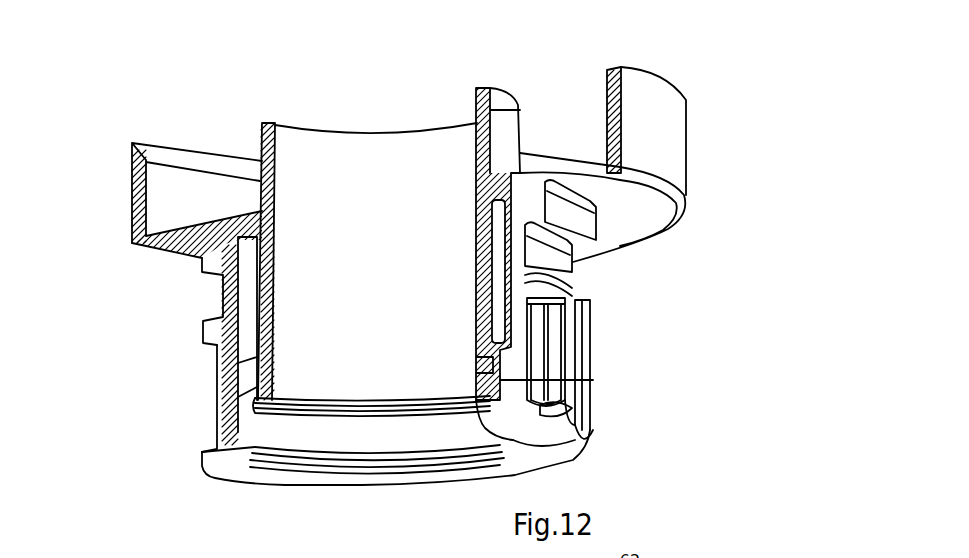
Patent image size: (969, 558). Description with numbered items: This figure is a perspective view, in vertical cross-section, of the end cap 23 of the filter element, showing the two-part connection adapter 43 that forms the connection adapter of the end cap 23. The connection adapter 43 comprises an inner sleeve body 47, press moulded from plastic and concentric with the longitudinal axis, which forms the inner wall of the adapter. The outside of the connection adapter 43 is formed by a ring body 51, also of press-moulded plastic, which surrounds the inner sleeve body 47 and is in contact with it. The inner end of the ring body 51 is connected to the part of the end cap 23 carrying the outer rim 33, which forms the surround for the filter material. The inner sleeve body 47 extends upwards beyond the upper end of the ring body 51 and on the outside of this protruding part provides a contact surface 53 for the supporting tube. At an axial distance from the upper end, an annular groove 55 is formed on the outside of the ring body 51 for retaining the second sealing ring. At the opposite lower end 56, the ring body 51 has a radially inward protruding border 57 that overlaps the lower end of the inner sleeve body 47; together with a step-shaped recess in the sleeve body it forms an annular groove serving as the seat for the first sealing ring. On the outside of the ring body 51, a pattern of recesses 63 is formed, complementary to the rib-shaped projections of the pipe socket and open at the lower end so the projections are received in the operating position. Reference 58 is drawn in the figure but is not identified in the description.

The end cap 23 is at (131, 245).
The outer rim 33 is at (131, 183).
The connection adapter 43 is at (636, 366).
The inner sleeve body 47 is at (220, 362).
The ring body 51 is at (601, 188).
The contact surface 53 is at (517, 113).
The annular groove 55 is at (222, 296).
The lower end 56 is at (528, 428).
The border 57 is at (268, 447).
The lower step 58 is at (217, 428).
The recesses 63 is at (597, 368).